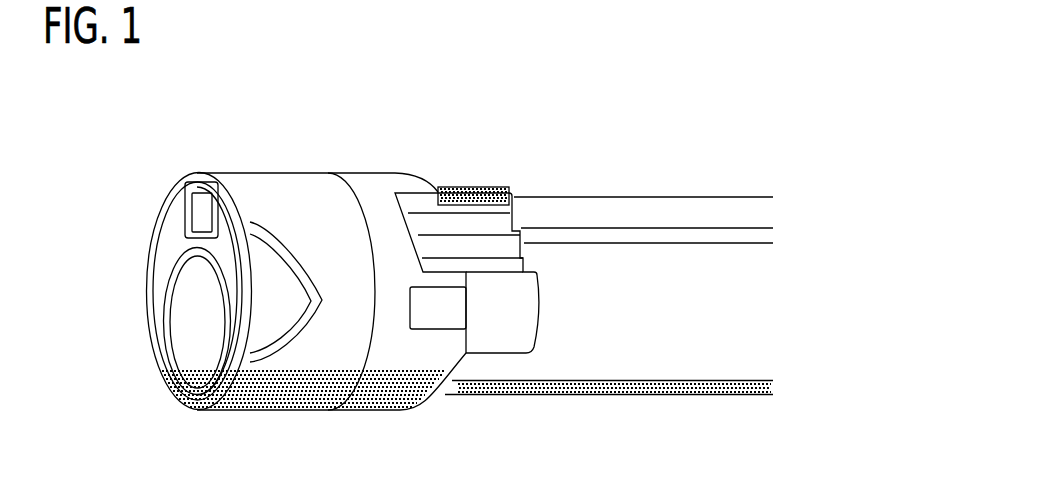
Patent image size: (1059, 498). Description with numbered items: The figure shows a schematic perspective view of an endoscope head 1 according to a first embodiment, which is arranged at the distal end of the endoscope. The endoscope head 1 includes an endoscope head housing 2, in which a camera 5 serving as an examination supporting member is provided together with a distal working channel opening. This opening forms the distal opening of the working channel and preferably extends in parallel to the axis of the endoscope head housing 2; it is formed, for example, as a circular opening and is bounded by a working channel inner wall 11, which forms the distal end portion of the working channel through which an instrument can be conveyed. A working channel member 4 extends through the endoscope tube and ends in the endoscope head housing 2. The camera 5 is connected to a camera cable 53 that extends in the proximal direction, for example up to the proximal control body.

The endoscope head 1 is at (287, 187).
The endoscope head housing 2 is at (250, 183).
The working channel member 4 is at (658, 367).
The camera 5 is at (202, 212).
The working channel inner wall 11 is at (198, 345).
The camera cable 53 is at (693, 213).